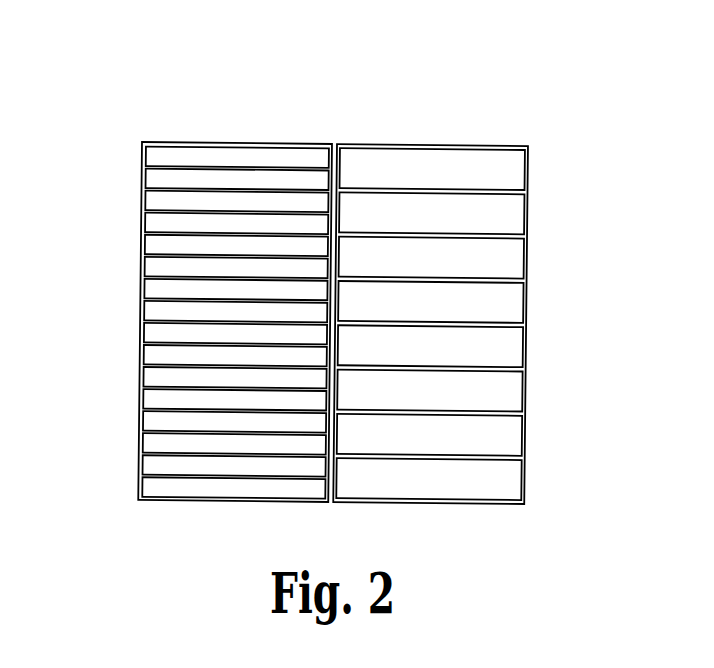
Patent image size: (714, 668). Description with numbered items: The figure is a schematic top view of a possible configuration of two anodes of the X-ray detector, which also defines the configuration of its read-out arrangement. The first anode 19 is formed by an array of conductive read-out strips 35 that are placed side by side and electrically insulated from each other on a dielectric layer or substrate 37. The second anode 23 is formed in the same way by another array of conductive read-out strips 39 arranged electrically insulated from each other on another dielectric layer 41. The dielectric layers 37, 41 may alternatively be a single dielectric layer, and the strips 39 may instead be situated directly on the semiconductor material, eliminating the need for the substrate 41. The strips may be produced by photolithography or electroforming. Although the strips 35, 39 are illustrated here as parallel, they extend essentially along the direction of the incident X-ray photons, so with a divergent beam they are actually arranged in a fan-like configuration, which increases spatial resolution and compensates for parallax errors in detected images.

The anode 19 is at (218, 137).
The anode 23 is at (480, 140).
The conductive read-out strips 35 is at (155, 152).
The dielectric layer 37 is at (140, 196).
The conductive read-out strips 39 is at (504, 175).
The dielectric layer 41 is at (527, 235).